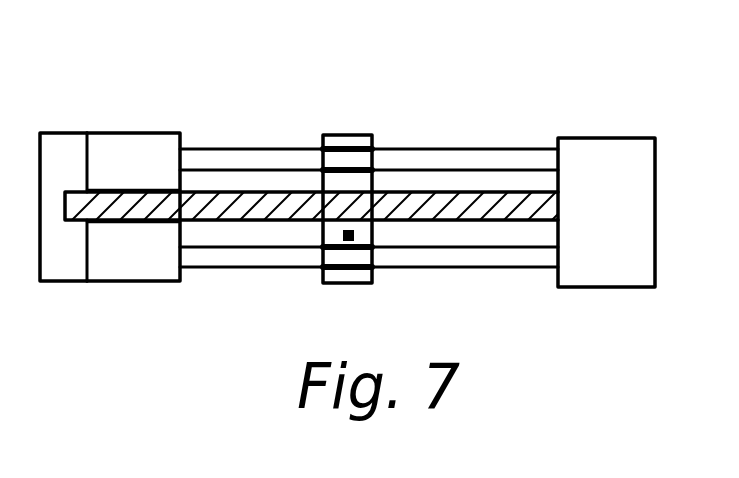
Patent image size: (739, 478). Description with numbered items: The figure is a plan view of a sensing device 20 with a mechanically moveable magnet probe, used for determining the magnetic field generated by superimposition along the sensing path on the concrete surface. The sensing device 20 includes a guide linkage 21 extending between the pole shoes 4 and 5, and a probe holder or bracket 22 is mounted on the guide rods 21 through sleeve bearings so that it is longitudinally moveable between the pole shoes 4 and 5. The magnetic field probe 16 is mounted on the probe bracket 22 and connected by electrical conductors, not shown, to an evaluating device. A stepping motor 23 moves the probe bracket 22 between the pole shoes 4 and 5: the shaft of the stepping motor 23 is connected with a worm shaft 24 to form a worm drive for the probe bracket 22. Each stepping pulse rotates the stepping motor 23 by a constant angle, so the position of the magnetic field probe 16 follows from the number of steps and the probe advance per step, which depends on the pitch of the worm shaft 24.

The pole shoe 4 is at (129, 165).
The pole shoe 5 is at (607, 178).
The magnetic field probe 16 is at (348, 231).
The sensing device 20 is at (351, 84).
The guide linkage 21 is at (428, 162).
The probe holder or bracket 22 is at (347, 277).
The stepping motor 23 is at (61, 252).
The worm shaft 24 is at (220, 223).